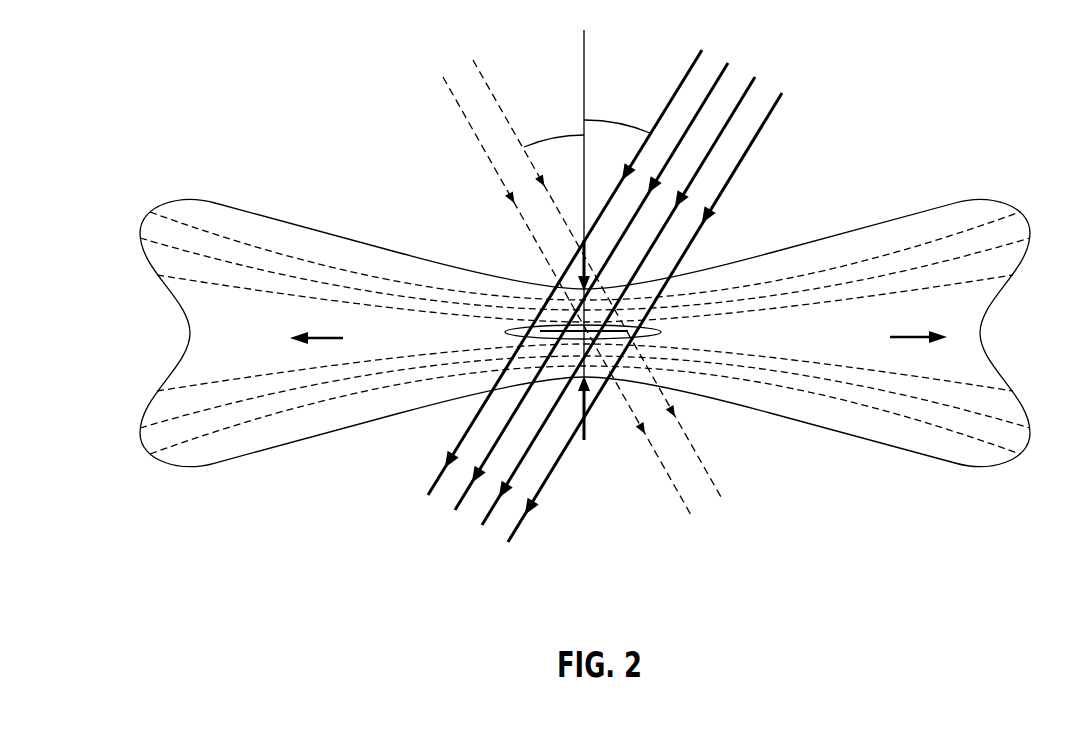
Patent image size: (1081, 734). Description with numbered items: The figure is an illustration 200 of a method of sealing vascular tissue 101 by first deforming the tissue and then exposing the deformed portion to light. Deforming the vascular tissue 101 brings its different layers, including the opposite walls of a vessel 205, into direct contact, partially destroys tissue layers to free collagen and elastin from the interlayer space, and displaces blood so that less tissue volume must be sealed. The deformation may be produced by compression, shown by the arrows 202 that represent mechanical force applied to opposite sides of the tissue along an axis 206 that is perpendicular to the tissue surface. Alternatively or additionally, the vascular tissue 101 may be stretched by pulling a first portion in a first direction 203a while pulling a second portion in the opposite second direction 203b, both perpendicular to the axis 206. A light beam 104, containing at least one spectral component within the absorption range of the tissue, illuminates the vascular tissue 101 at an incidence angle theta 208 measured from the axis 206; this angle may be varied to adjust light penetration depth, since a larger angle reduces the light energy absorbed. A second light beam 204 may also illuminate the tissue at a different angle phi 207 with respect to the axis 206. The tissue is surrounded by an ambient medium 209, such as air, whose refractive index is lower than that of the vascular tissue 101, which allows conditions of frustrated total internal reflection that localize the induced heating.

The vascular tissue 101 is at (238, 367).
The light beam 104 is at (800, 92).
The illustration 200 is at (290, 107).
The arrows 202 is at (580, 257).
The first direction 203a is at (320, 337).
The second direction 203b is at (910, 332).
The second light beam 204 is at (472, 50).
The vessel 205 is at (663, 332).
The axis 206 is at (584, 43).
The angle phi 207 is at (525, 145).
The incidence angle theta 208 is at (648, 131).
The ambient medium 209 is at (418, 176).